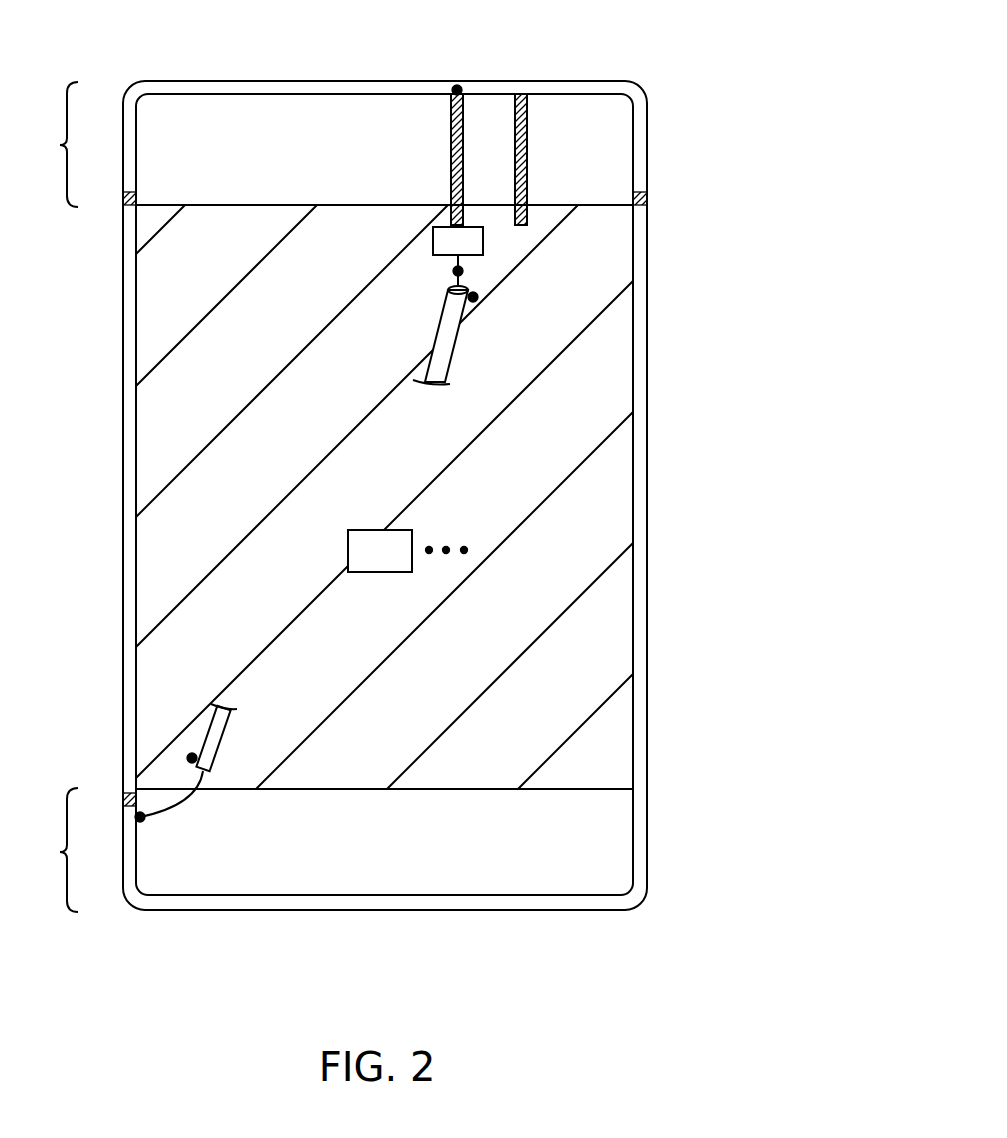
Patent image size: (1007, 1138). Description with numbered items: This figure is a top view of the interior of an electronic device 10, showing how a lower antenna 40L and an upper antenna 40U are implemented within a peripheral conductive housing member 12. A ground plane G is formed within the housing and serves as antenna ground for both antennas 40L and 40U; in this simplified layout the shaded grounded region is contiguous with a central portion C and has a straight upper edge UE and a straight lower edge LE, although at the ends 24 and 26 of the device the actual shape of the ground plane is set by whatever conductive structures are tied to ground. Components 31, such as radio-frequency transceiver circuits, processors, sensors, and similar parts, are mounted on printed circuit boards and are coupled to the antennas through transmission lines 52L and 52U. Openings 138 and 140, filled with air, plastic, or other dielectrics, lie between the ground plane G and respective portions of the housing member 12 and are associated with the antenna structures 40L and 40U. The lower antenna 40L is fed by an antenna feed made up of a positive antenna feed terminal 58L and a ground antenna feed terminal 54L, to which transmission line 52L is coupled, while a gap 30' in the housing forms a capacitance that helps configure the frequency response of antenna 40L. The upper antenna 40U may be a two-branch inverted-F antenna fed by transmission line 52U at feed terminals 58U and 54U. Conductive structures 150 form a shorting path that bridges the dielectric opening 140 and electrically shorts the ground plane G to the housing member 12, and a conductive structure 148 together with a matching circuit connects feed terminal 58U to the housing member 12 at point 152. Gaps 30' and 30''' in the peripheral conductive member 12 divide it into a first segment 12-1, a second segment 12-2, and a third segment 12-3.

The electronic device 10 is at (784, 267).
The peripheral conductive housing member 12 is at (662, 400).
The first segment 12-1 is at (265, 88).
The second segment 12-2 is at (128, 597).
The third segment 12-3 is at (593, 903).
The end of device 24 is at (51, 144).
The end of device 26 is at (51, 850).
The gap 30' is at (79, 765).
The gap 30''' is at (703, 220).
The components 31 is at (373, 530).
The upper antenna 40U is at (680, 136).
The lower antenna 40L is at (676, 842).
The transmission line 52U is at (450, 343).
The transmission line 52L is at (222, 733).
The antenna feed terminal 54U is at (473, 297).
The ground antenna feed terminal 54L is at (192, 758).
The antenna feed terminal 58U is at (455, 271).
The positive antenna feed terminal 58L is at (140, 817).
The opening 138 is at (480, 878).
The opening 140 is at (375, 118).
The conductive structure 148 is at (465, 128).
The conductive structures 150 is at (527, 128).
The point 152 is at (452, 89).
The central portion C is at (185, 478).
The ground plane G is at (608, 595).
The upper edge UE is at (355, 205).
The lower edge LE is at (340, 789).